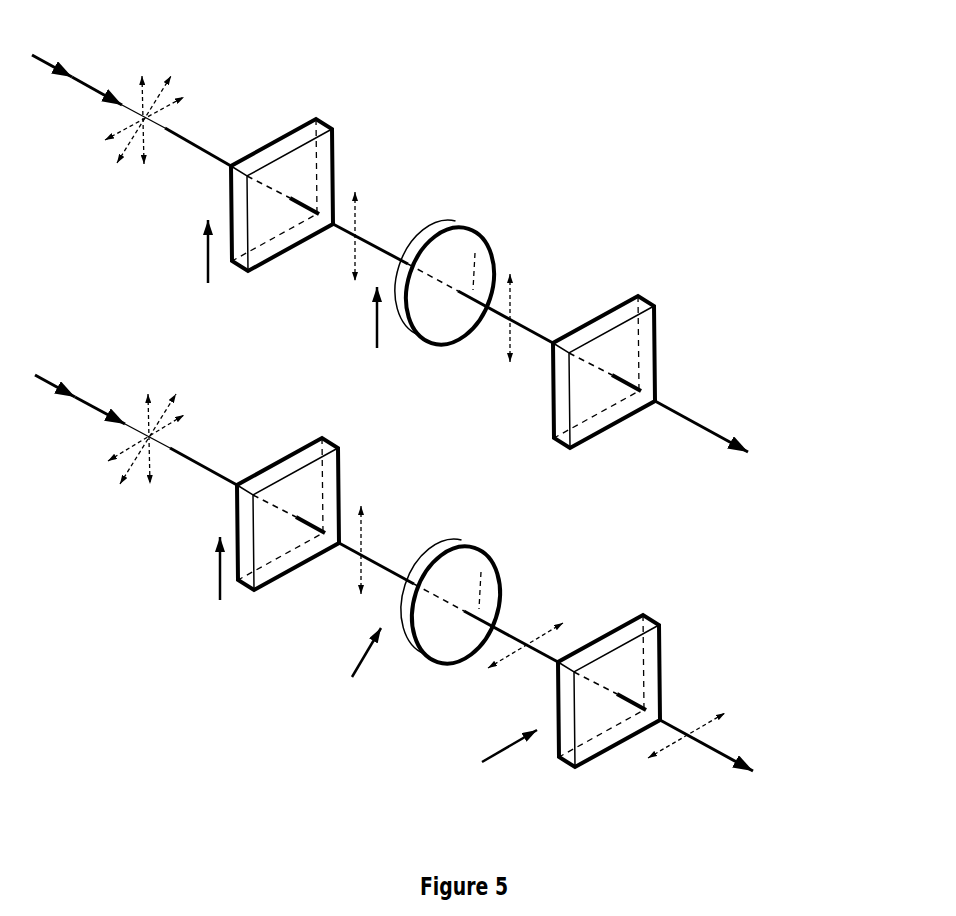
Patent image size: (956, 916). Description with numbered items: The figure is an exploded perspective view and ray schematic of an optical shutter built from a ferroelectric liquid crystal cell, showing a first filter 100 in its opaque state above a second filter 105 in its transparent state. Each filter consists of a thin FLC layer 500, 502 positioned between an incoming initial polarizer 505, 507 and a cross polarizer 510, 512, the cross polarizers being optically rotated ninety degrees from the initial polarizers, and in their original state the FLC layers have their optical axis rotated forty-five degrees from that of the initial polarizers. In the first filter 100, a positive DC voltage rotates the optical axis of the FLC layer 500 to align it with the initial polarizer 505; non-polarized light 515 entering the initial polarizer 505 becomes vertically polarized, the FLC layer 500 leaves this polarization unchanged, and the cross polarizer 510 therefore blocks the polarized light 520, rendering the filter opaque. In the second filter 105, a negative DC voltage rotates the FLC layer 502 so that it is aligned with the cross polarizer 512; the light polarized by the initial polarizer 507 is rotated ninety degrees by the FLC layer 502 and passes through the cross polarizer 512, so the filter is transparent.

The first filter 100 is at (507, 140).
The second filter 105 is at (262, 647).
The FLC layer 500 is at (467, 233).
The FLC layer 502 is at (457, 545).
The initial polarizer 505 is at (317, 118).
The initial polarizer 507 is at (322, 437).
The cross polarizer 510 is at (650, 302).
The cross polarizer 512 is at (636, 614).
The non-polarized light 515 is at (139, 102).
The polarized light 520 is at (353, 220).